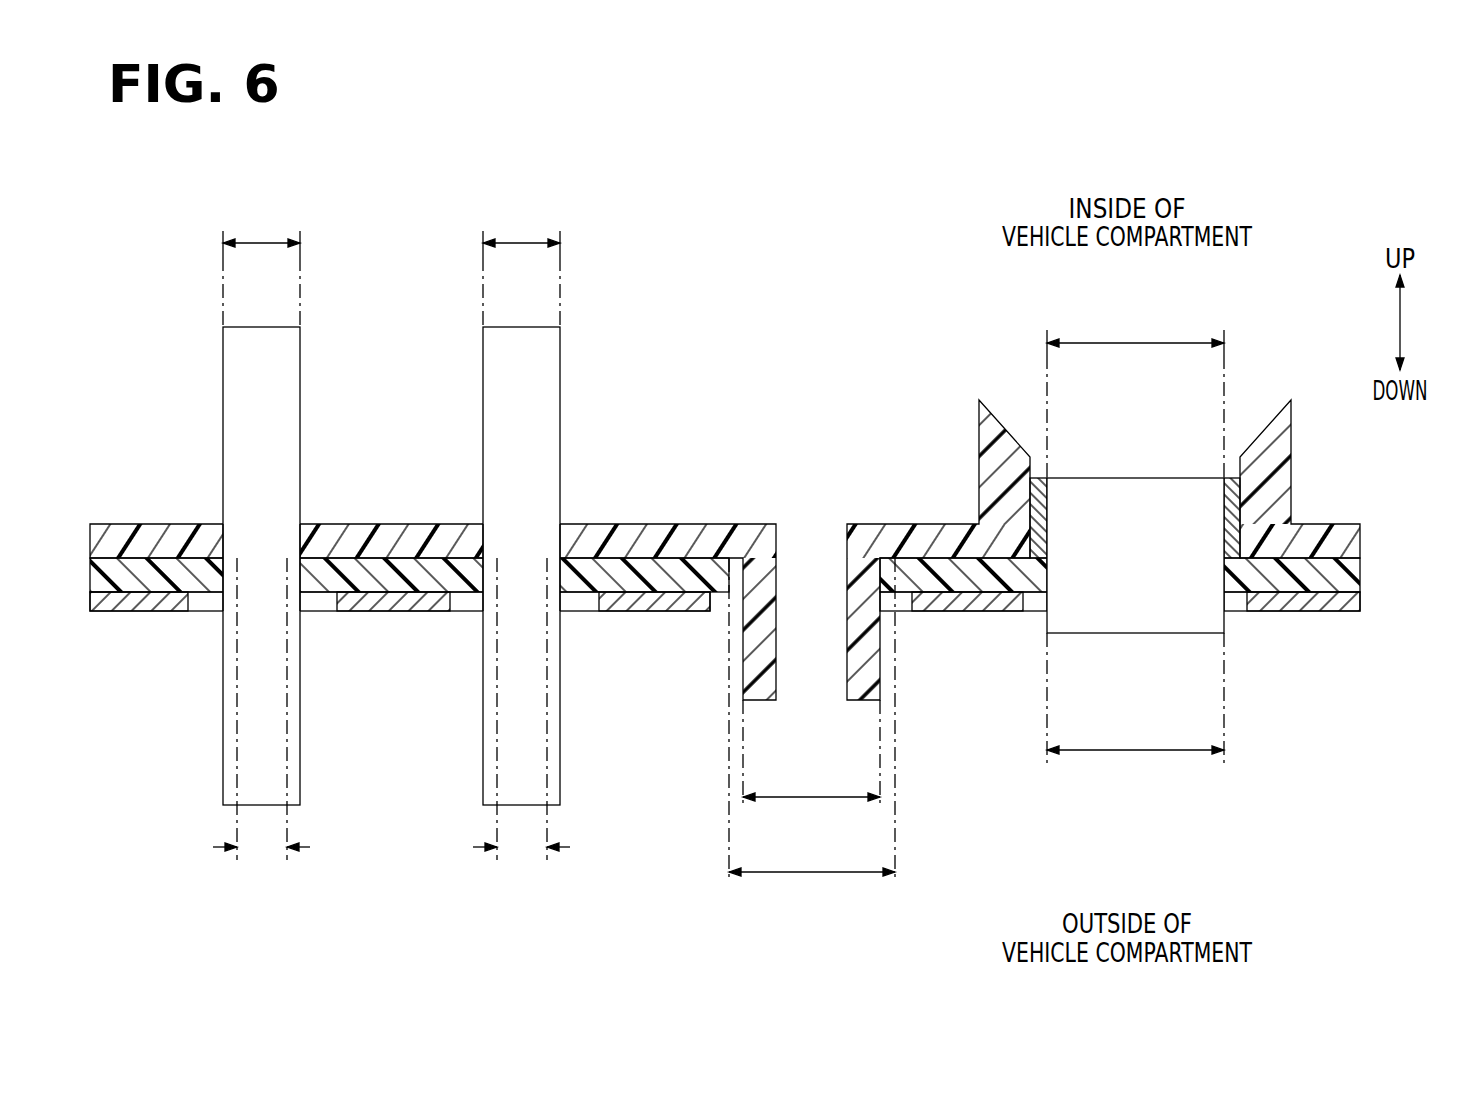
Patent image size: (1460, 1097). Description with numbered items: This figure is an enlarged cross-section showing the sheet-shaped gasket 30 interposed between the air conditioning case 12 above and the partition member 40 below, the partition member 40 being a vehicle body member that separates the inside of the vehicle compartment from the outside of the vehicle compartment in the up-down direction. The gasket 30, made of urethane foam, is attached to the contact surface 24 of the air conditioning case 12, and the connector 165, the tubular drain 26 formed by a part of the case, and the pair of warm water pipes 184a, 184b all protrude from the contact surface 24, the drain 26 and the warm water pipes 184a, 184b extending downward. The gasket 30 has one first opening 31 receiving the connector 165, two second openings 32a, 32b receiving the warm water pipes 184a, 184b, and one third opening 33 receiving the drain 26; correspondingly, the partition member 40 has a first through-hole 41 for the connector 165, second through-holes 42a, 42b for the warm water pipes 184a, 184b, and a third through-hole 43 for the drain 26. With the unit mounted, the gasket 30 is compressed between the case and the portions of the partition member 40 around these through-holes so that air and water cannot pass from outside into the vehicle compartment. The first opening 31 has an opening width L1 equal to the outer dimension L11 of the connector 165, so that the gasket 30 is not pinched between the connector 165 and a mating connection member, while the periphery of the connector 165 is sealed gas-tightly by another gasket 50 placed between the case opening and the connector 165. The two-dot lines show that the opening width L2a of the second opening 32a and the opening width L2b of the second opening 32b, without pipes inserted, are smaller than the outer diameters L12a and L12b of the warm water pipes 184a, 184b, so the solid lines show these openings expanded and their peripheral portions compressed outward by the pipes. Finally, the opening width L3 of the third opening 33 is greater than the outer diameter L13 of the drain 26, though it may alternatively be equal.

The air conditioning case 12 is at (1345, 542).
The gasket 30 is at (1350, 573).
The partition member 40 is at (1348, 605).
The contact surface 24 is at (667, 572).
The drain 26 is at (744, 678).
The third opening 33 is at (893, 573).
The third through-hole 43 is at (905, 612).
The second through-hole 42a is at (597, 596).
The second through-hole 42b is at (337, 596).
The second opening 32a is at (498, 560).
The second opening 32b is at (238, 560).
The warm water pipe 184a is at (484, 753).
The warm water pipe 184b is at (224, 753).
The connector 165 is at (1046, 616).
The gasket 50 is at (1040, 478).
The first opening 31 is at (1224, 580).
The first through-hole 41 is at (1238, 612).
The outer diameter of warm water pipe L12b is at (263, 243).
The outer diameter of warm water pipe L12a is at (523, 243).
The outer dimension of connector L11 is at (1113, 343).
The opening width of first opening L1 is at (1143, 750).
The opening width of second opening L2b is at (263, 847).
The opening width of second opening L2a is at (523, 847).
The outer diameter of drain L13 is at (813, 797).
The opening width of third opening L3 is at (812, 872).